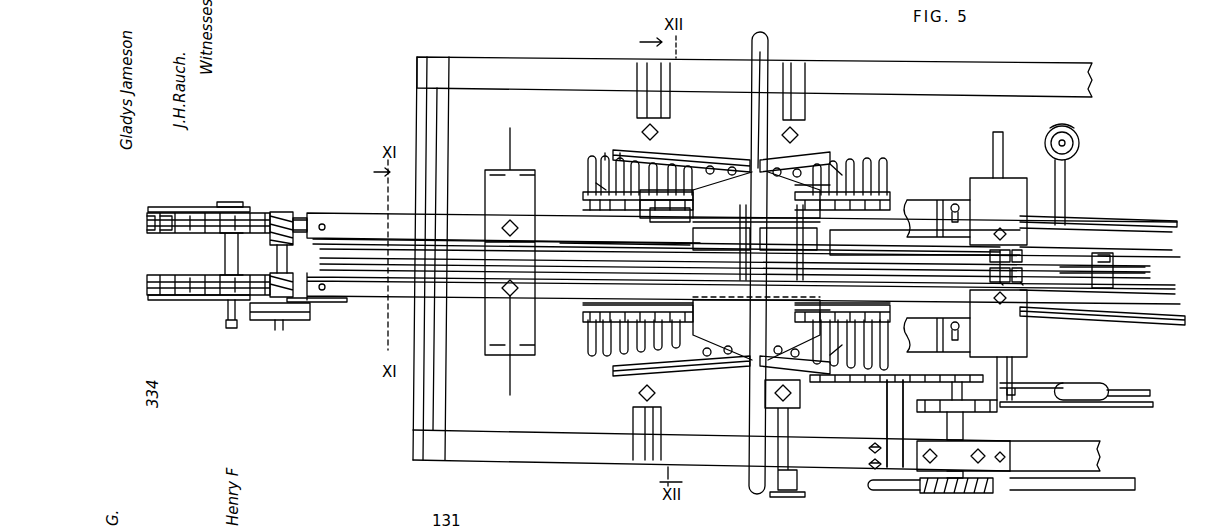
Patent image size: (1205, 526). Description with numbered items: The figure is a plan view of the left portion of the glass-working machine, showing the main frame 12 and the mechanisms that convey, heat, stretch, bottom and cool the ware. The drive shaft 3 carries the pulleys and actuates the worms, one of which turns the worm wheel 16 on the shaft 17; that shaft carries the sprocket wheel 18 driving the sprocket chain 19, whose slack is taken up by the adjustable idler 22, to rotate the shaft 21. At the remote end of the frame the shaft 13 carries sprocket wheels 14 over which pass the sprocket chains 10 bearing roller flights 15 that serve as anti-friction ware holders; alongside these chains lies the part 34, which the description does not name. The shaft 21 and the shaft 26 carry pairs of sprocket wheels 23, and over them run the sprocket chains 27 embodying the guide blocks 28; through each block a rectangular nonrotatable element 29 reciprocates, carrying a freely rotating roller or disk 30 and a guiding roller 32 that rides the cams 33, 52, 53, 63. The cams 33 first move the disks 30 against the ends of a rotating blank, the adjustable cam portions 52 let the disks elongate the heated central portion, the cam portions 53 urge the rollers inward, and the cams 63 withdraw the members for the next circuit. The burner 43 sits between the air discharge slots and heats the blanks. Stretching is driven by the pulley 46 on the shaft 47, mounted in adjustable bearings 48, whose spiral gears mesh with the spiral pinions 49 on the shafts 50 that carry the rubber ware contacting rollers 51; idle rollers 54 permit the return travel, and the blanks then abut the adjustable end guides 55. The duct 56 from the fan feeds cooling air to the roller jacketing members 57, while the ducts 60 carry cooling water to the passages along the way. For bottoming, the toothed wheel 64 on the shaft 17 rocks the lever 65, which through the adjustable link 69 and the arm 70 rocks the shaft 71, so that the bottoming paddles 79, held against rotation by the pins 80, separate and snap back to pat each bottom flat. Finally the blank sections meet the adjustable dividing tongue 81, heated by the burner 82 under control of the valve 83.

The shaft 3 is at (876, 488).
The sprocket chains or conveyers 10 is at (147, 222).
The main frame 12 is at (532, 57).
The shaft 13 is at (228, 330).
The sprocket wheels 14 is at (168, 233).
The roller flights 15 is at (150, 236).
The worm wheel 16 is at (965, 493).
The shaft 17 is at (950, 395).
The sprocket wheel 18 is at (955, 380).
The sprocket chain 19 is at (918, 376).
The shaft 21 is at (845, 253).
The adjustable idler 22 is at (883, 382).
The sprocket wheels 23 is at (592, 180).
The shaft 26 is at (640, 245).
The sprocket chains 27 is at (668, 210).
The guide blocks 28 is at (584, 195).
The rectangular nonrotatable element 29 is at (596, 188).
The roller 30 is at (583, 315).
The guiding roller 32 is at (612, 158).
The cams 33 is at (632, 152).
The guide plate 34 is at (175, 208).
The burner 43 is at (592, 262).
The pulley 46 is at (305, 320).
The shaft 47 is at (280, 335).
The adjustable bearings 48 is at (298, 214).
The spiral pinions 49 is at (300, 220).
The shafts 50 is at (303, 226).
The ware contacting rollers 51 is at (737, 236).
The adjustable cam portions 52 is at (682, 162).
The adjustable cam portions 53 is at (792, 163).
The idle rollers 54 is at (797, 236).
The adjustable end guides 55 is at (925, 200).
The duct 56 is at (770, 42).
The roller jacketing members 57 is at (860, 185).
The ducts 60 is at (328, 224).
The cams 63 is at (835, 160).
The toothed wheel 64 is at (975, 412).
The lever 65 is at (1110, 405).
The adjustable link 69 is at (1118, 392).
The arm 70 is at (1040, 388).
The shaft 71 is at (1027, 346).
The bottoming paddles or plates 79 is at (988, 264).
The pins 80 is at (990, 276).
The dividing member or tongue 81 is at (1143, 260).
The burner 82 is at (1040, 260).
The valve 83 is at (1081, 138).